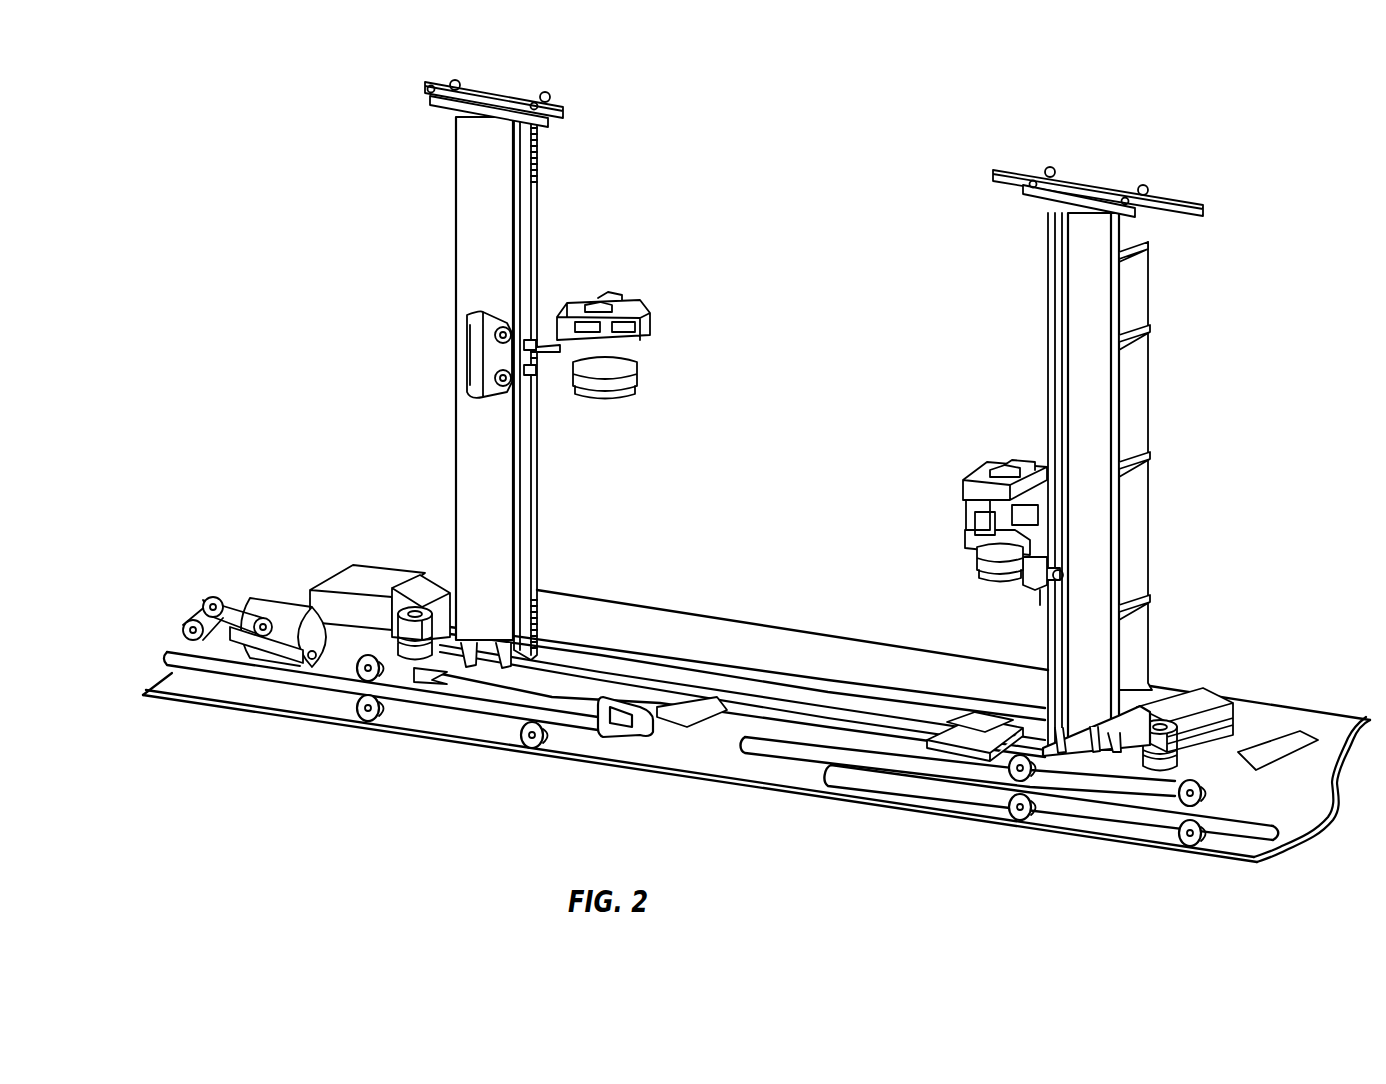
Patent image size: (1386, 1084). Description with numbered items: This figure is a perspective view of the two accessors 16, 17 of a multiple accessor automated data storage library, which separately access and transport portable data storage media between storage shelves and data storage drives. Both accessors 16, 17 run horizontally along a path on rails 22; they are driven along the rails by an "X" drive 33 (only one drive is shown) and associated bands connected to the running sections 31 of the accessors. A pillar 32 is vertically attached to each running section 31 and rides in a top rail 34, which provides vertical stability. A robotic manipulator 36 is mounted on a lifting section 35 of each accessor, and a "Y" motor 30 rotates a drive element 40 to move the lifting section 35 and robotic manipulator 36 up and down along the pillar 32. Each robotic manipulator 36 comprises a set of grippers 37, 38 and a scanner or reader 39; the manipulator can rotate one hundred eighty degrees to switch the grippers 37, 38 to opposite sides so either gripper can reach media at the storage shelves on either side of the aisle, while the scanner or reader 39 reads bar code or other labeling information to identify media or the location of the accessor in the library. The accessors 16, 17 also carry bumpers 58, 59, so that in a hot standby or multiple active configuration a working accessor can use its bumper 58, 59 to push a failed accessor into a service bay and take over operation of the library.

The accessor 16 is at (437, 282).
The accessor 17 is at (1168, 352).
The rails 22 is at (748, 712).
The "Y" motor 30 is at (415, 662).
The running section 31 is at (435, 572).
The pillar 32 is at (458, 449).
The "X" drive 33 is at (337, 600).
The top rail 34 is at (1006, 173).
The lifting section 35 is at (569, 385).
The robotic manipulator 36 is at (640, 360).
The gripper 37 is at (618, 298).
The gripper 38 is at (632, 300).
The scanner or reader 39 is at (605, 300).
The drive element 40 is at (540, 548).
The bumper 58 is at (635, 737).
The bumper 59 is at (913, 750).